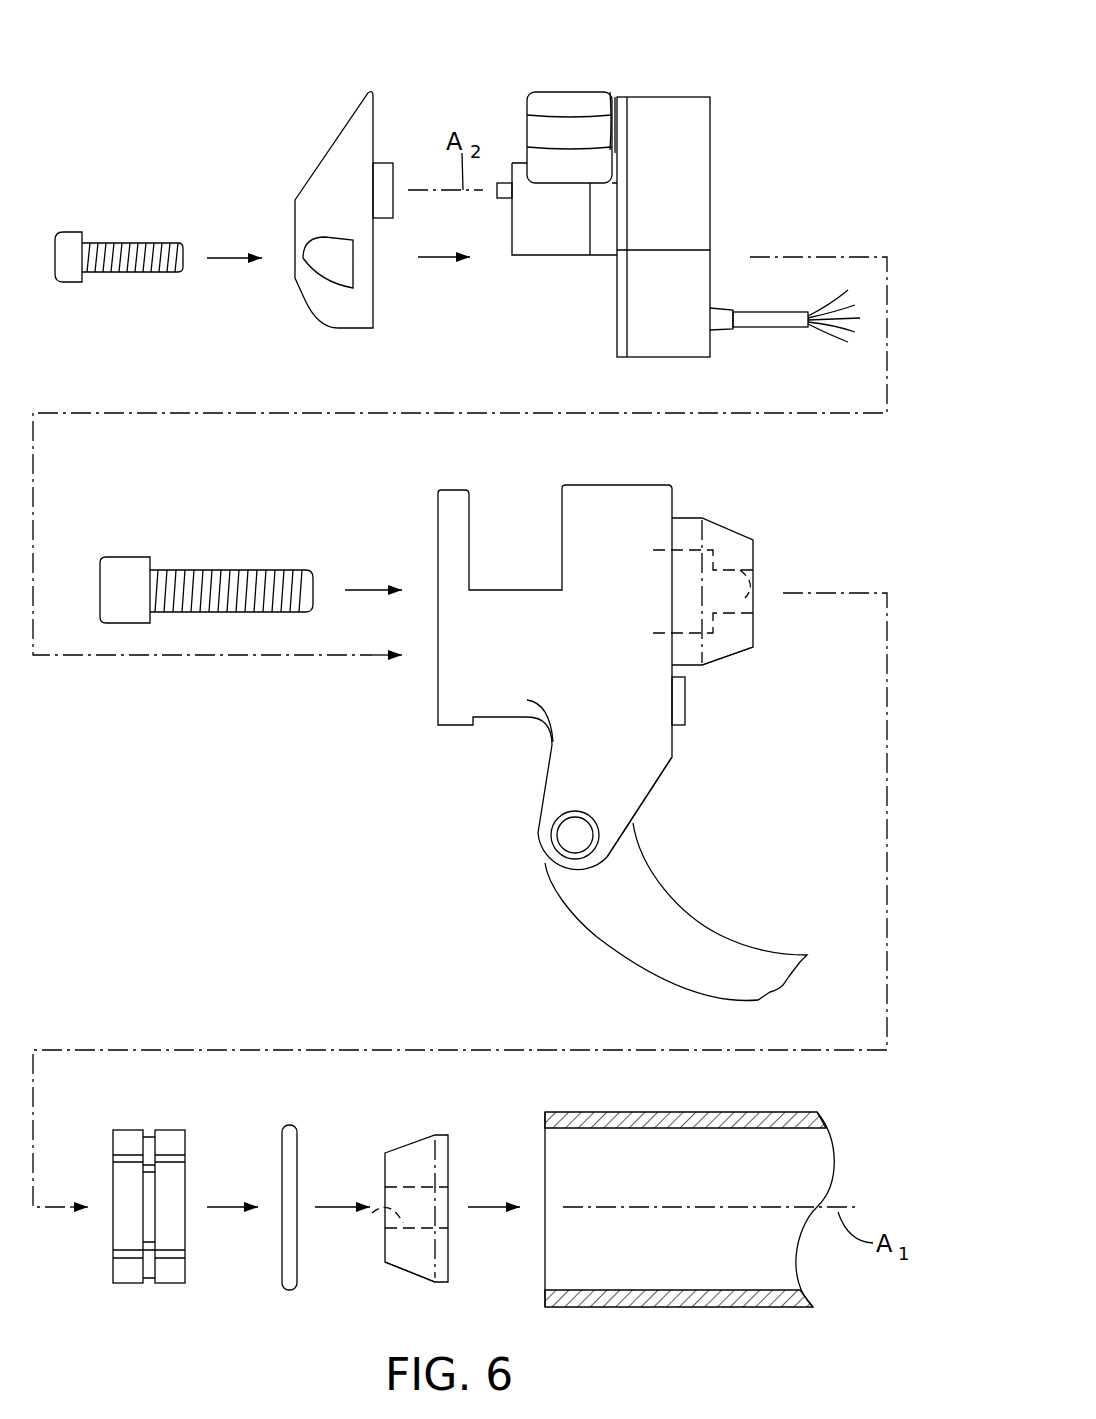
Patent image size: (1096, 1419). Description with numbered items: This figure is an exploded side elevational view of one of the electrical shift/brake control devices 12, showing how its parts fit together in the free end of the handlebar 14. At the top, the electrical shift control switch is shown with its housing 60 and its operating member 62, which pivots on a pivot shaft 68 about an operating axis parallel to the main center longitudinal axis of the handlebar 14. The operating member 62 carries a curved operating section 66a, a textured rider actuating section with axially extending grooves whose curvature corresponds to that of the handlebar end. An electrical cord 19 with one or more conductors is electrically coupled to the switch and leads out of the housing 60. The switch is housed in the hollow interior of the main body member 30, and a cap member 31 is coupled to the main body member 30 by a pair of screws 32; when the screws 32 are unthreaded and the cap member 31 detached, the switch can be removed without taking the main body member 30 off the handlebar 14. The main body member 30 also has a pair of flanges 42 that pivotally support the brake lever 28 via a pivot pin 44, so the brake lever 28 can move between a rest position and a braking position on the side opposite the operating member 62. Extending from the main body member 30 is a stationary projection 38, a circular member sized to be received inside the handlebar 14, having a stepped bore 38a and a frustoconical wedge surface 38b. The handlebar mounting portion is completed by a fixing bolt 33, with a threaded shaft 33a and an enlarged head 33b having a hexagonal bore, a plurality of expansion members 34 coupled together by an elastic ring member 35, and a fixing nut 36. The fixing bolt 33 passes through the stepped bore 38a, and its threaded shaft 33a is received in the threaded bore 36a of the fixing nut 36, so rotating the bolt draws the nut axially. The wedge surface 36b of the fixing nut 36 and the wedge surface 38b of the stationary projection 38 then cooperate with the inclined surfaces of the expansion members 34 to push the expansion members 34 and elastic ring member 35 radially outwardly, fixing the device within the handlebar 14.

The electrical shift/brake control device 12 is at (651, 208).
The handlebar 14 is at (770, 1110).
The electrical cord 19 is at (765, 330).
The brake lever 28 is at (643, 878).
The main body member 30 is at (502, 677).
The cap member 31 is at (335, 138).
The screws 32 is at (125, 243).
The fixing bolt 33 is at (216, 539).
The threaded shaft 33a is at (237, 568).
The enlarged head 33b is at (132, 557).
The expansion members 34 is at (187, 1178).
The elastic ring member 35 is at (290, 1125).
The fixing nut 36 is at (410, 1210).
The threaded bore 36a is at (373, 1213).
The wedge surface 36b is at (407, 1273).
The stationary projection 38 is at (755, 587).
The stepped bore 38a is at (753, 587).
The wedge surface 38b is at (732, 657).
The flanges 42 is at (602, 768).
The pivot pin 44 is at (570, 835).
The housing 60 is at (710, 162).
The operating member 62 is at (548, 97).
The curved operating section 66a is at (575, 90).
The pivot shaft 68 is at (503, 203).